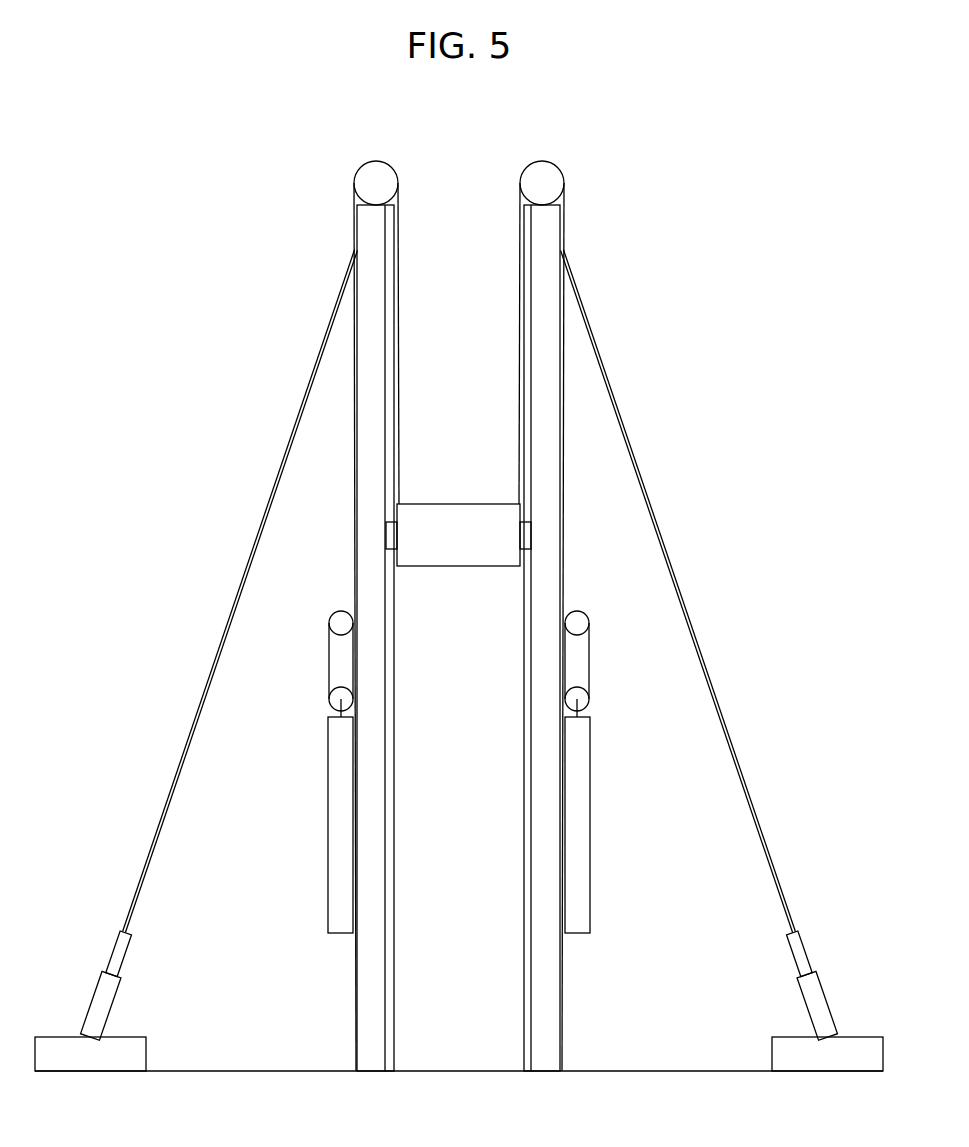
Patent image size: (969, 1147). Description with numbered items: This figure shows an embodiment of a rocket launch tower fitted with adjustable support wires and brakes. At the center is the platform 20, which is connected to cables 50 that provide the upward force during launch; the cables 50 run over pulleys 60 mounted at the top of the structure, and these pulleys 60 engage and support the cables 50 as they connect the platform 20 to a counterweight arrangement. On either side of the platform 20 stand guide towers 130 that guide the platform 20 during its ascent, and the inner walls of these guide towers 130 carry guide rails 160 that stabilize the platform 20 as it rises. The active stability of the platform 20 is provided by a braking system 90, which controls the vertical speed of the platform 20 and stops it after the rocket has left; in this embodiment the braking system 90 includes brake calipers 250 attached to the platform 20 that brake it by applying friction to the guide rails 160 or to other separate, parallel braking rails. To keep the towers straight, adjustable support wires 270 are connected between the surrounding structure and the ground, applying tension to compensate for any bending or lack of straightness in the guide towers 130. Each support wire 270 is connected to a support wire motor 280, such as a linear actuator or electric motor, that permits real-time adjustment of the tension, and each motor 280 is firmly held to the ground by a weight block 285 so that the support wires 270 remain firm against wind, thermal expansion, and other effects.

The platform 20 is at (463, 558).
The cables 50 is at (398, 285).
The pulleys 60 is at (372, 162).
The braking system 90 is at (204, 451).
The guide towers 130 is at (377, 229).
The guide rails 160 is at (389, 747).
The brake calipers 250 is at (392, 535).
The adjustable support wires 270 is at (198, 720).
The support wire motors 280 is at (115, 998).
The weight blocks 285 is at (147, 1053).